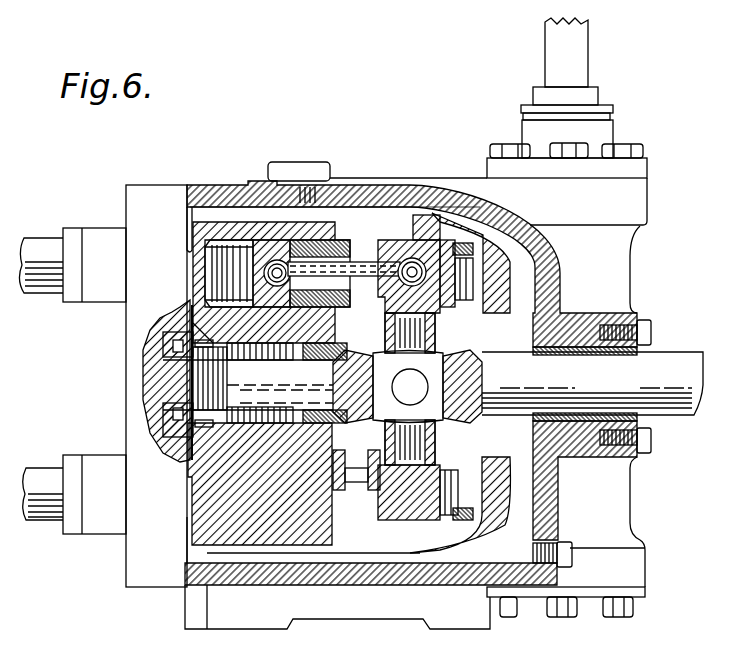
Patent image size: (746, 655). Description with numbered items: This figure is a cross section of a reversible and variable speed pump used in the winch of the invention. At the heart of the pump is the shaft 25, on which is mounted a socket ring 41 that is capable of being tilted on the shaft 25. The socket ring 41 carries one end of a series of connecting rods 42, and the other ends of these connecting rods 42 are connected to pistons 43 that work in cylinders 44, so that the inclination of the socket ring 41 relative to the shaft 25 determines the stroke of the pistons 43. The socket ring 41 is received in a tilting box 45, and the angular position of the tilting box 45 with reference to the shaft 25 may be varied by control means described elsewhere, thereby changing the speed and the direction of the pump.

The shaft 25 is at (680, 365).
The socket ring 41 is at (400, 530).
The connecting rods 42 is at (362, 267).
The pistons 43 is at (266, 247).
The cylinders 44 is at (242, 223).
The tilting box 45 is at (437, 215).